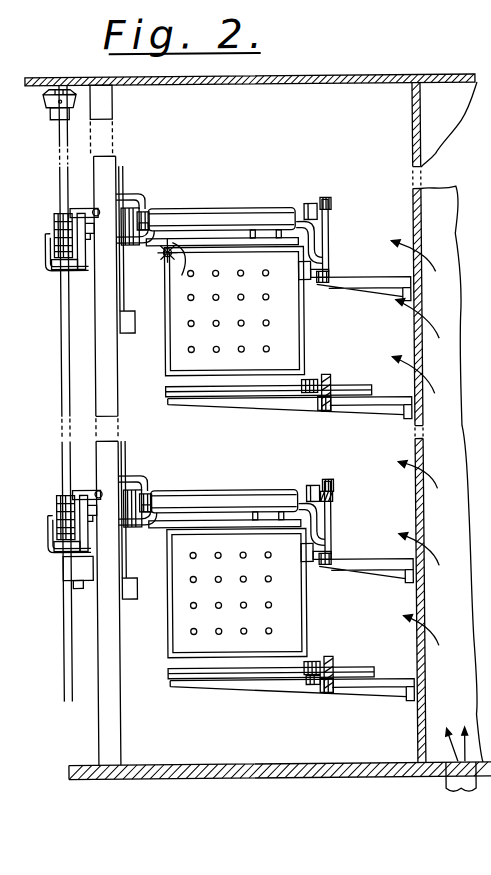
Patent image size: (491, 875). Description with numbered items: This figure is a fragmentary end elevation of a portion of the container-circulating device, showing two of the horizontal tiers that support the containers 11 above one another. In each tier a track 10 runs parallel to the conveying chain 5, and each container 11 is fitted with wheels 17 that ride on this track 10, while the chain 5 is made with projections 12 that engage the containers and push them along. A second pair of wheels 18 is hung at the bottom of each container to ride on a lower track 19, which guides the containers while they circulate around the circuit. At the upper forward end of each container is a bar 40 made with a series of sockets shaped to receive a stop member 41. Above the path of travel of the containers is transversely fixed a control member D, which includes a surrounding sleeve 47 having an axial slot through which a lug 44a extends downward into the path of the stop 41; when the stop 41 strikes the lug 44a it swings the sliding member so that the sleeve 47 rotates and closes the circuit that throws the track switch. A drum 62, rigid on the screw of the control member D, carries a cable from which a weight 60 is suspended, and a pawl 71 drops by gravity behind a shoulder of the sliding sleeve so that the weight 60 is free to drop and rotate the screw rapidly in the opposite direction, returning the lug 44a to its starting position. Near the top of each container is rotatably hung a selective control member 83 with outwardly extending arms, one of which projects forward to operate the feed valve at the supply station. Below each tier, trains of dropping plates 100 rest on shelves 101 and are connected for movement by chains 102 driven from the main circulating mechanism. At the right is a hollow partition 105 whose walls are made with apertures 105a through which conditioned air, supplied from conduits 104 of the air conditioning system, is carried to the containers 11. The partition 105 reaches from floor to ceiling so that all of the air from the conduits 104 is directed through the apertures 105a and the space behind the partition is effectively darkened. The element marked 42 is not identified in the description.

The chain 5 is at (331, 277).
The track 10 is at (333, 498).
The container 11 is at (287, 340).
The projection 12 is at (315, 272).
The wheel 17 is at (331, 205).
The wheel 18 is at (320, 382).
The track 19 is at (330, 680).
The bar 40 is at (245, 241).
The stop member 41 is at (258, 236).
The tab 42 is at (256, 510).
The lug 44a is at (281, 231).
The sleeve 47 is at (215, 222).
The weight 60 is at (135, 331).
The drum 62 is at (144, 210).
The pawl 71 is at (77, 208).
The selective control member 83 is at (164, 255).
The dropping plate 100 is at (183, 399).
The shelf 101 is at (244, 411).
The chain 102 is at (327, 393).
The conduit 104 is at (465, 783).
The hollow partition 105 is at (437, 197).
The aperture 105a is at (417, 491).
The control member D is at (202, 160).